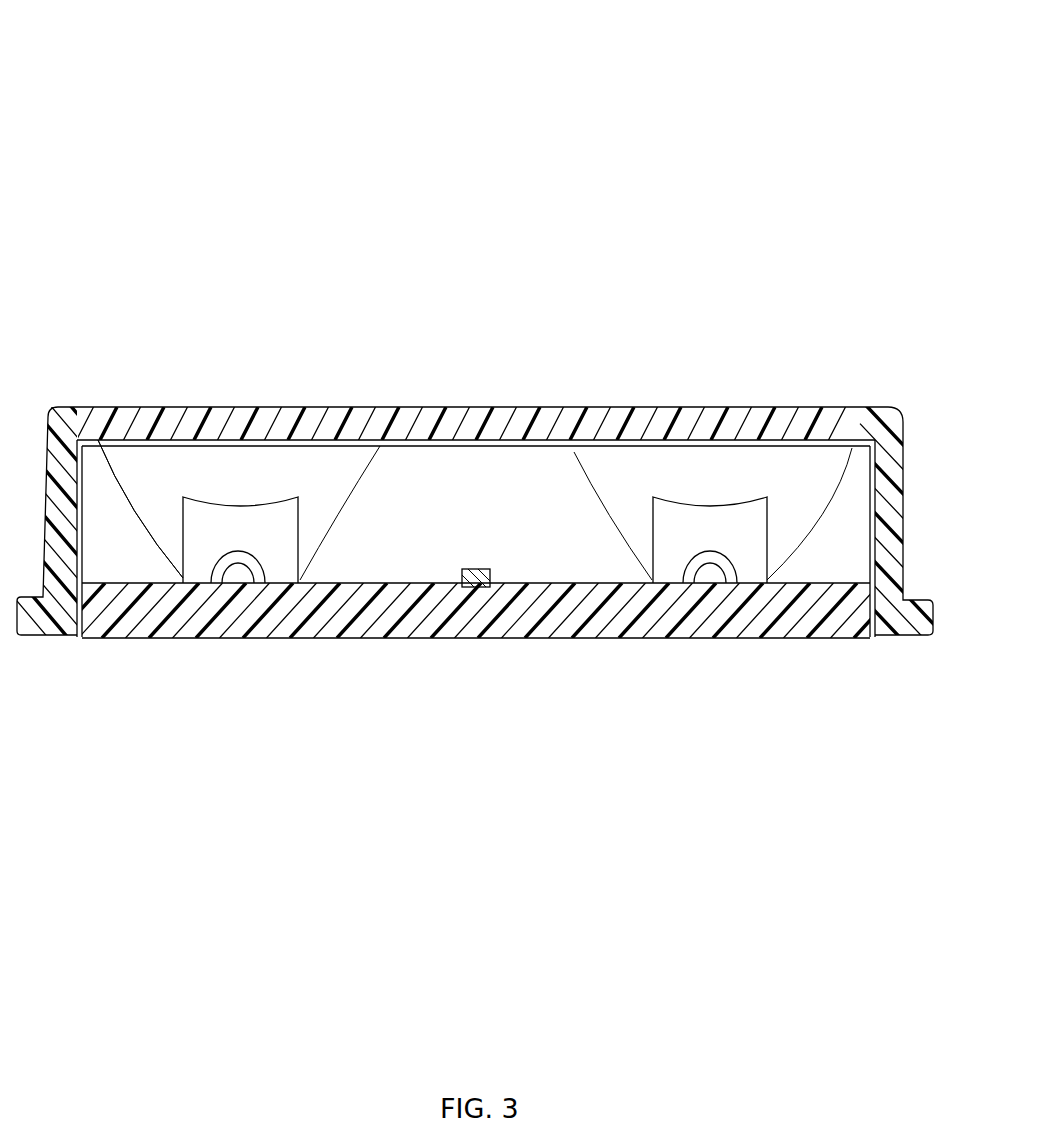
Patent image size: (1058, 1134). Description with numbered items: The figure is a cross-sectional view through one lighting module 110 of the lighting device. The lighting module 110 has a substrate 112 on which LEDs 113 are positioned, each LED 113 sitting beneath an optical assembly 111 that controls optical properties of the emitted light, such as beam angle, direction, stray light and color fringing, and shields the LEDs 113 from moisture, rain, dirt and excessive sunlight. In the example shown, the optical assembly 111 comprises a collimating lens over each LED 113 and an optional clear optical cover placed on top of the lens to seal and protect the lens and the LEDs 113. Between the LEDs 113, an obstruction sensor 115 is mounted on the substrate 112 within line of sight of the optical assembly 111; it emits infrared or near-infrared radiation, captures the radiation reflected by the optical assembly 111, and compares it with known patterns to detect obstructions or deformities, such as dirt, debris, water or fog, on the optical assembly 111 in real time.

The lighting module 110 is at (828, 88).
The optical assembly 111 is at (577, 453).
The substrate 112 is at (585, 610).
The LED 113 is at (243, 577).
The obstruction sensor 115 is at (477, 581).